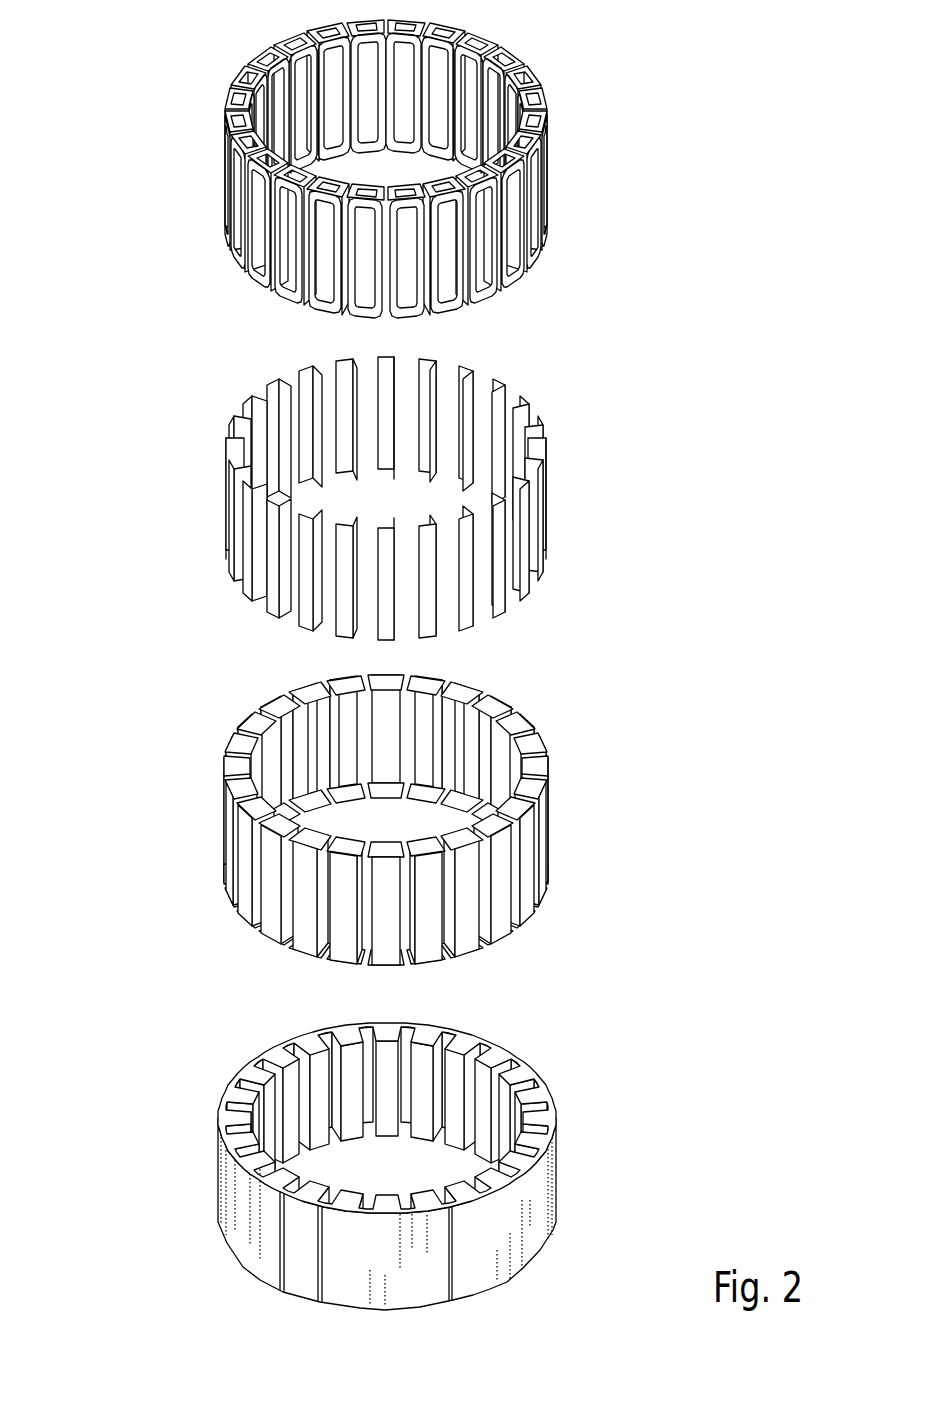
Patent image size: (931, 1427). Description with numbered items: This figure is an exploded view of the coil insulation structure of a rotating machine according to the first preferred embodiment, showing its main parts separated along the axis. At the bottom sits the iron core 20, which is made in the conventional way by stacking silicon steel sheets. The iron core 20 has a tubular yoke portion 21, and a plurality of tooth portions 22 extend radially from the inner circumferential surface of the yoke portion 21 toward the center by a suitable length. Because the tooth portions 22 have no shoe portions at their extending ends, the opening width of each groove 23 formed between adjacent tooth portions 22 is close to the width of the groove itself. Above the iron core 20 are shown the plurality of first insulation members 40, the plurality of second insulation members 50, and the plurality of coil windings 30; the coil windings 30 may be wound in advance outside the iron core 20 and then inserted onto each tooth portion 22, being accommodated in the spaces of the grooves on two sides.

The iron core 20 is at (404, 1104).
The yoke portion 21 is at (558, 1164).
The tooth portion 22 is at (296, 1052).
The groove 23 is at (275, 1062).
The coil winding 30 is at (240, 76).
The first insulation member 40 is at (550, 772).
The second insulation member 50 is at (232, 546).